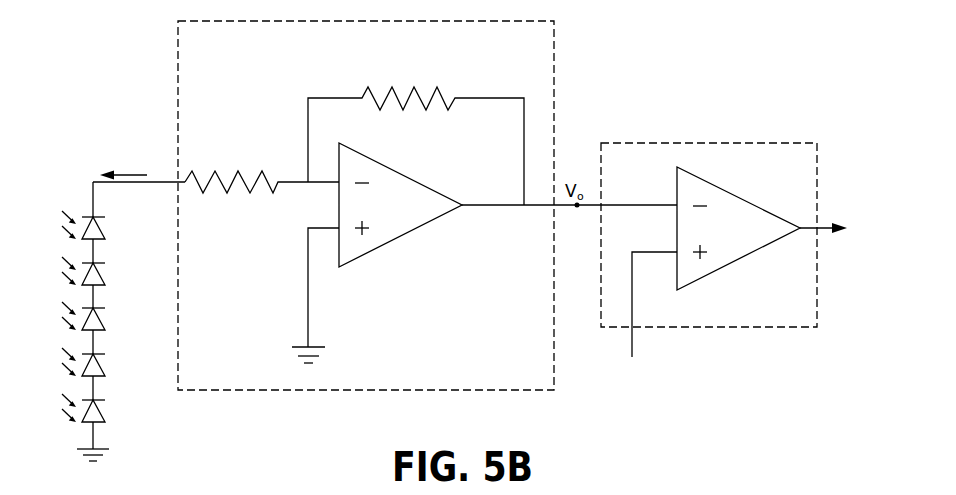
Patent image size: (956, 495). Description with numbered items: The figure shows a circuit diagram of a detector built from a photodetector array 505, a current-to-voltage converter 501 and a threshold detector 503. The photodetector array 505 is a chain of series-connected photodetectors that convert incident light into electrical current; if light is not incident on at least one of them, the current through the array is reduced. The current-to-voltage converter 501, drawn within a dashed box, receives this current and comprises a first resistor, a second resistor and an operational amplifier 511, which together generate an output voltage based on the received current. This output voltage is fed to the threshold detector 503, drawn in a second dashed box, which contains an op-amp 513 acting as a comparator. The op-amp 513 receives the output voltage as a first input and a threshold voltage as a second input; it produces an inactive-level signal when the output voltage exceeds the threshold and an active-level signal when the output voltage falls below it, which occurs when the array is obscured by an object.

The current-to-voltage converter 501 is at (405, 205).
The threshold detector 503 is at (724, 239).
The photodetector array 505 is at (116, 220).
The operational amplifier 511 is at (400, 205).
The op-amp 513 is at (738, 228).